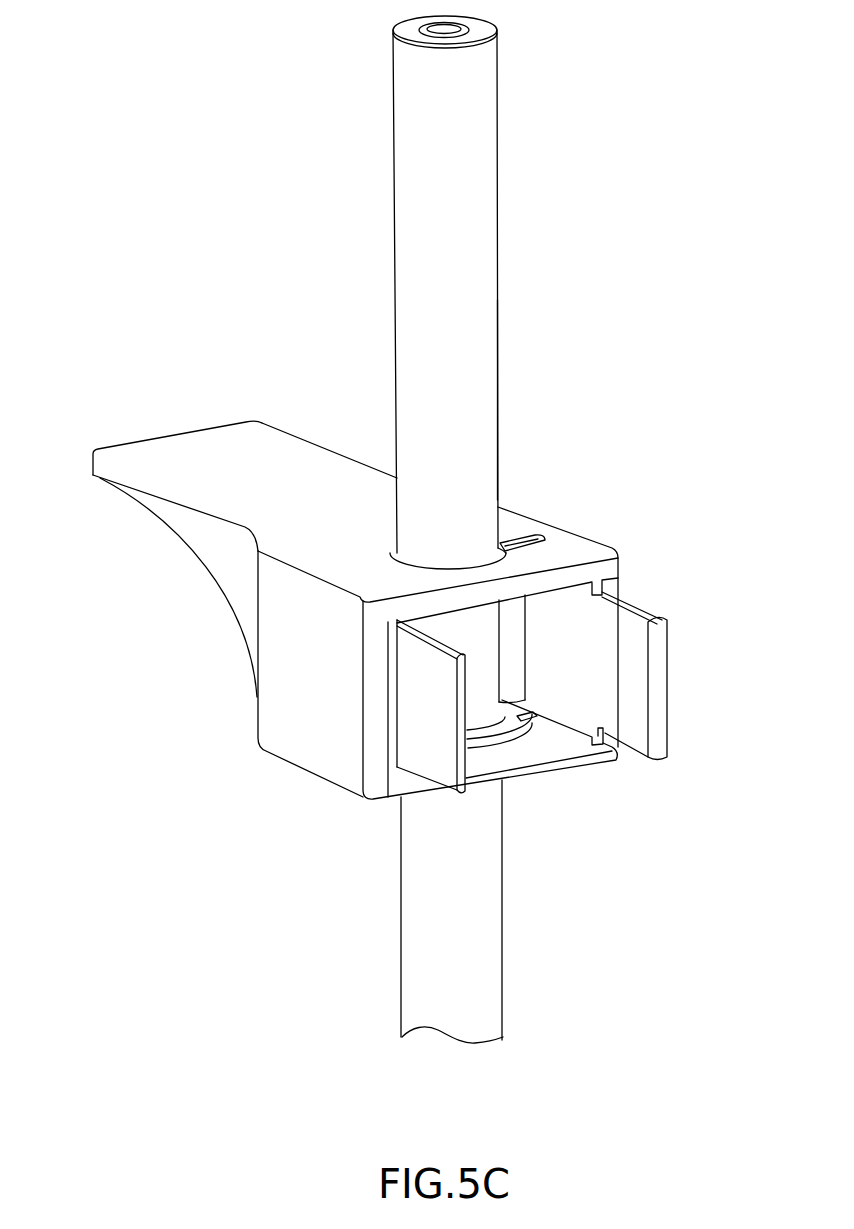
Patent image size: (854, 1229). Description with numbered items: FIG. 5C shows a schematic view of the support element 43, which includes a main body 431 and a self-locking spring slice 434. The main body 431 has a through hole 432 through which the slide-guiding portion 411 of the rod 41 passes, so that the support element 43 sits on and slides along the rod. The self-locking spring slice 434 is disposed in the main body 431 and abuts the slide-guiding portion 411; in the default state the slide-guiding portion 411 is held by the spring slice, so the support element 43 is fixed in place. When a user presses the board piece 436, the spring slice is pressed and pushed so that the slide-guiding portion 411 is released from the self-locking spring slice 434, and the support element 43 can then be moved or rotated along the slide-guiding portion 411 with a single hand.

The rod 41 is at (396, 186).
The slide-guiding portion 411 is at (478, 413).
The support element 43 is at (568, 548).
The main body 431 is at (207, 443).
The through hole 432 is at (393, 553).
The self-locking spring slice 434 is at (676, 670).
The board piece 436 is at (437, 762).